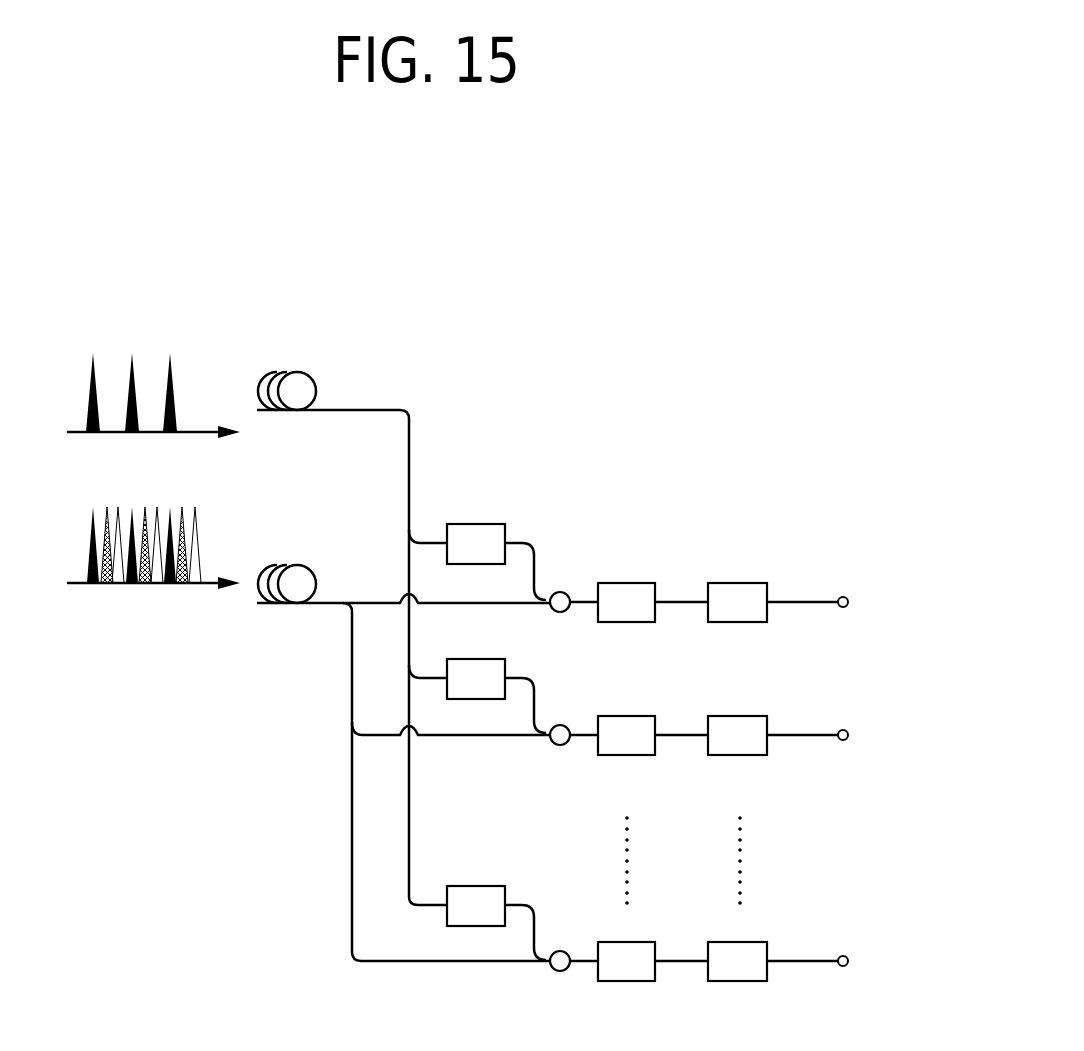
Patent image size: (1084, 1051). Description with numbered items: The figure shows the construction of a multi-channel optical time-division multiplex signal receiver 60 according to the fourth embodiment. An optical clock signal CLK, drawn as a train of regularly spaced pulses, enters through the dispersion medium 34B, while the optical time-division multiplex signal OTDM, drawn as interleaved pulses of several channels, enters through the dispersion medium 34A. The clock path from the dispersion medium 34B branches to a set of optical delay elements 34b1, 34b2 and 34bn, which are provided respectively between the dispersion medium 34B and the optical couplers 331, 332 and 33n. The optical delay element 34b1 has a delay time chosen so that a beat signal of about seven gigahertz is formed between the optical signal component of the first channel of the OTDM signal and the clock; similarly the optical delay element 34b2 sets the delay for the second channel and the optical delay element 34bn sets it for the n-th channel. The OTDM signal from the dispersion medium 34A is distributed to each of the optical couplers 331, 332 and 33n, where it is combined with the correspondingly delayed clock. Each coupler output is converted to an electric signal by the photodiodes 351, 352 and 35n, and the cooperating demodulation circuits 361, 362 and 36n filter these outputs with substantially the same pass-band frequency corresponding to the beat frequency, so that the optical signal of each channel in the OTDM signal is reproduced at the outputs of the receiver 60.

The multi-channel optical time-division multiplex signal receiver 60 is at (460, 275).
The dispersion medium 34A is at (317, 584).
The dispersion medium 34B is at (317, 391).
The optical delay element 34b1 is at (476, 524).
The optical delay element 34b2 is at (476, 659).
The optical delay element 34bn is at (476, 886).
The optical coupler 331 is at (563, 592).
The optical coupler 332 is at (563, 725).
The optical coupler 33n is at (563, 951).
The photodiode 351 is at (607, 622).
The photodiode 352 is at (607, 755).
The photodiode 35n is at (607, 981).
The demodulation circuit 361 is at (752, 622).
The demodulation circuit 362 is at (752, 755).
The demodulation circuit 36n is at (752, 981).